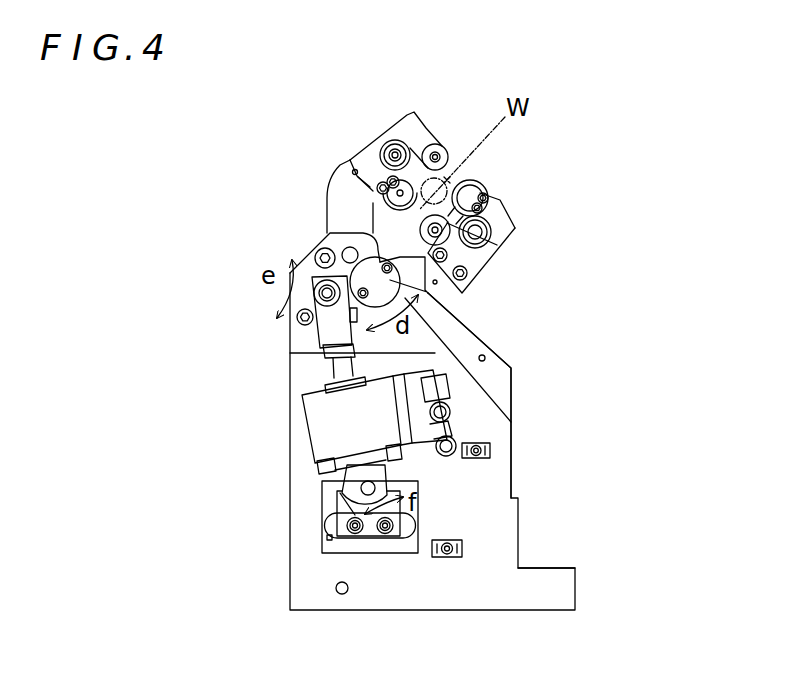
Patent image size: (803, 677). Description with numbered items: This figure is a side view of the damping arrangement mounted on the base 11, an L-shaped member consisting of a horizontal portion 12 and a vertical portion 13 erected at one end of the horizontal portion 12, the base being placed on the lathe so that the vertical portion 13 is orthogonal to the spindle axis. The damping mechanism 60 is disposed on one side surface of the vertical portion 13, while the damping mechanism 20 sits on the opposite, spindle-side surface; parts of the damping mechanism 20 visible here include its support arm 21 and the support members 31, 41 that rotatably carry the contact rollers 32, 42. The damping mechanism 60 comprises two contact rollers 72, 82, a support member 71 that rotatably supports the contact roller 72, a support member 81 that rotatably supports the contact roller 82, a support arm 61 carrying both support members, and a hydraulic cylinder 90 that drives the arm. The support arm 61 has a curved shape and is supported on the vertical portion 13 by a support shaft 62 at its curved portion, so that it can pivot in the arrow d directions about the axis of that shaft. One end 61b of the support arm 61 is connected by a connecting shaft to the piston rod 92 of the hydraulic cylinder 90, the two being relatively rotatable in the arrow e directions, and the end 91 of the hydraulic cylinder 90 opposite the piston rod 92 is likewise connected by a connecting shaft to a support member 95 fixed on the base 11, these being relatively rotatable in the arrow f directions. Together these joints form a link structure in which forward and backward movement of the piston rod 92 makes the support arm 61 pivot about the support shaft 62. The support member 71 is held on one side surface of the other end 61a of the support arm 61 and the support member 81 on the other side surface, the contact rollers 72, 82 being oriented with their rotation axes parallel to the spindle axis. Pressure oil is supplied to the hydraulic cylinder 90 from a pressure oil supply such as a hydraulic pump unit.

The base 11 is at (442, 441).
The horizontal portion 12 is at (558, 577).
The vertical portion 13 is at (511, 449).
The damping mechanism 20 is at (322, 150).
The support arm 21 is at (330, 212).
The support member 31 is at (407, 121).
The contact roller 32 is at (446, 146).
The support member 41 is at (374, 156).
The contact roller 42 is at (378, 207).
The damping mechanism 60 is at (512, 348).
The support arm 61 is at (447, 285).
The other end of the support arm 61a is at (485, 266).
The one end of the support arm 61b is at (305, 283).
The support shaft 62 is at (395, 293).
The support member 71 is at (505, 218).
The contact roller 72 is at (470, 182).
The support member 81 is at (489, 223).
The contact roller 82 is at (445, 253).
The hydraulic cylinder 90 is at (318, 431).
The end of the hydraulic cylinder 91 is at (340, 491).
The piston rod 92 is at (325, 330).
The support member 95 is at (340, 520).